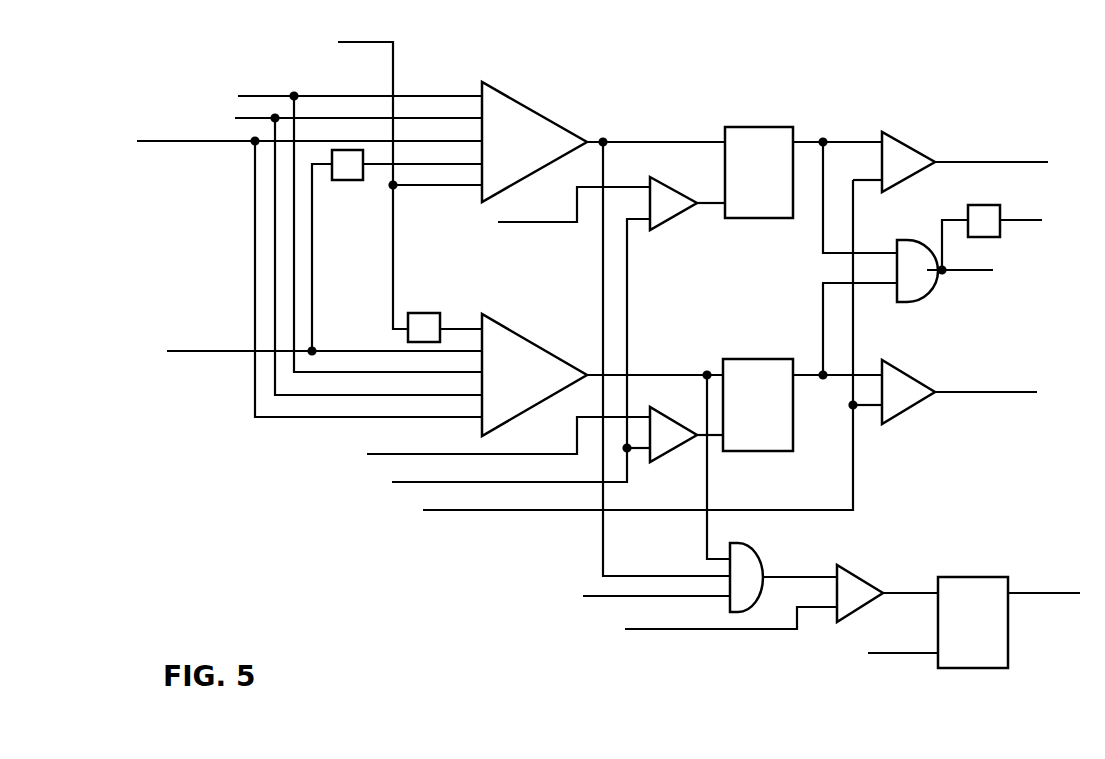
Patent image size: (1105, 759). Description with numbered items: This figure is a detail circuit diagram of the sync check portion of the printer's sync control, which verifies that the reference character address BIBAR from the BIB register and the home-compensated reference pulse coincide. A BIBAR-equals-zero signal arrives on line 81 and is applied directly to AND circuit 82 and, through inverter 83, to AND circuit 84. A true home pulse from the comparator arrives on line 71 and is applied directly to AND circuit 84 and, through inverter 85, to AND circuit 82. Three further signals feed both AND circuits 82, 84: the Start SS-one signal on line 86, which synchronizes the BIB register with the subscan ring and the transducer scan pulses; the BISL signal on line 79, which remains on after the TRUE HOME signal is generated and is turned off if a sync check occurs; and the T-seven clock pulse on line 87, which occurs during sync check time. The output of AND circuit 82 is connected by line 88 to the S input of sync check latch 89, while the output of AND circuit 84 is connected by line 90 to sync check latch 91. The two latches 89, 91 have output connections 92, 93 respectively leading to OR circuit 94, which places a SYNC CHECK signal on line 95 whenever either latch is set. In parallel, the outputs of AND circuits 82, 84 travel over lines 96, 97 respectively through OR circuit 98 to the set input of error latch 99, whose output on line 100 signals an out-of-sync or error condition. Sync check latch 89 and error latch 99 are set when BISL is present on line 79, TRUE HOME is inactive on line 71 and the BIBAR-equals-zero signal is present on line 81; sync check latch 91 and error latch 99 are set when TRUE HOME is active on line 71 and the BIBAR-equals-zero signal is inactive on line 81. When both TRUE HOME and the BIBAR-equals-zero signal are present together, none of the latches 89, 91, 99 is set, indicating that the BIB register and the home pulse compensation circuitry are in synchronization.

The line 71 is at (366, 353).
The line 79 is at (248, 143).
The line 81 is at (393, 70).
The AND circuit 82 is at (522, 106).
The inverter 83 is at (418, 313).
The AND circuit 84 is at (546, 348).
The inverter 85 is at (356, 180).
The line 86 is at (266, 96).
The line 87 is at (364, 119).
The output line of AND gate 82 88 is at (673, 144).
The sync check latch 89 is at (756, 127).
The line 90 is at (675, 377).
The sync check latch 91 is at (750, 359).
The output connection 92 is at (861, 144).
The output connection 93 is at (806, 377).
The OR circuit 94 is at (914, 248).
The line 95 is at (978, 272).
The line 96 is at (608, 536).
The line 97 is at (712, 527).
The OR circuit 98 is at (751, 556).
The error latch 99 is at (966, 577).
The line 100 is at (1021, 594).